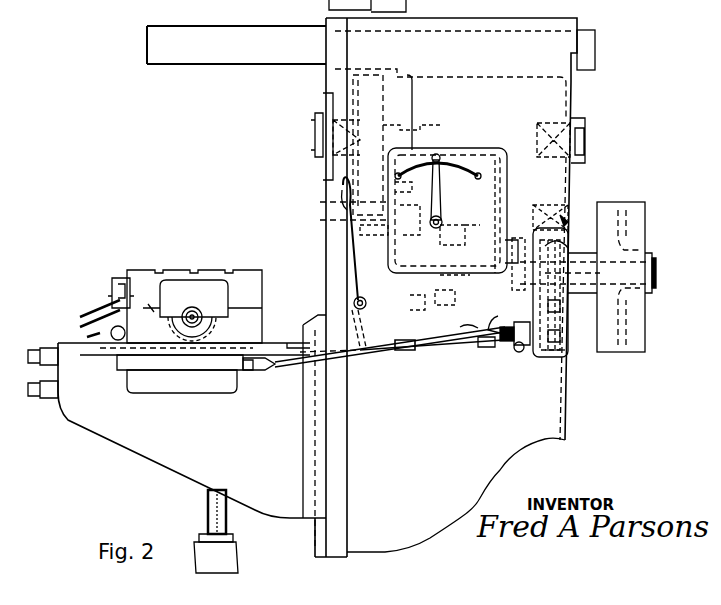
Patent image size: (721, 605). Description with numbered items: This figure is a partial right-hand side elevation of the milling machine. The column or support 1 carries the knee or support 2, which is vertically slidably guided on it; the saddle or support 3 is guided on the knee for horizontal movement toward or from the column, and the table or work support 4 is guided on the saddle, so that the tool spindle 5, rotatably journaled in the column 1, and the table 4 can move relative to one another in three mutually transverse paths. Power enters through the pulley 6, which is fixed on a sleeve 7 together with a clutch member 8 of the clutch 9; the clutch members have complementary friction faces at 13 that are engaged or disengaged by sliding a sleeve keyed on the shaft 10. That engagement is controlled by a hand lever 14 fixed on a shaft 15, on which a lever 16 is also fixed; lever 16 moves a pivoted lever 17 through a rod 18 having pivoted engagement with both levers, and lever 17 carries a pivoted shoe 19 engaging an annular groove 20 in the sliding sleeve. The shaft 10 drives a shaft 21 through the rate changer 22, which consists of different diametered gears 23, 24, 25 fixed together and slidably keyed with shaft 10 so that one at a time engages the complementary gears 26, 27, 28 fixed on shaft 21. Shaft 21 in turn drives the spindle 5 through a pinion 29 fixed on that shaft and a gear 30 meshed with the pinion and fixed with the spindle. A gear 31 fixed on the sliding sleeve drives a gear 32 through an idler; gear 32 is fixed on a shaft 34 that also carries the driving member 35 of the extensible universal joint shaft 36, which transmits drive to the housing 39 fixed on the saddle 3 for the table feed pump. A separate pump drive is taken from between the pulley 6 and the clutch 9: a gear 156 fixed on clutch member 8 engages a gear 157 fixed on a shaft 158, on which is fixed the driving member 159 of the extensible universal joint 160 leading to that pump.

The column 1 is at (566, 416).
The knee 2 is at (152, 464).
The saddle 3 is at (262, 332).
The table 4 is at (245, 270).
The tool spindle 5 is at (323, 123).
The pulley 6 is at (610, 206).
The sleeve 7 is at (590, 253).
The clutch member 8 is at (568, 219).
The clutch 9 is at (567, 245).
The shaft 10 is at (464, 276).
The friction faces 13 is at (540, 215).
The hand lever 14 is at (342, 239).
The shaft 15 is at (366, 304).
The lever 16 is at (368, 322).
The pivoted lever 17 is at (527, 350).
The rod 18 is at (480, 348).
The pivoted shoe 19 is at (504, 225).
The annular groove 20 is at (522, 262).
The shaft 21 is at (482, 205).
The rate changer 22 is at (445, 245).
The gear 23 is at (416, 300).
The gear 24 is at (425, 322).
The gear 25 is at (445, 296).
The gear 26 is at (398, 194).
The gear 27 is at (447, 196).
The gear 28 is at (478, 174).
The pinion 29 is at (367, 232).
The gear 30 is at (383, 102).
The gear 31 is at (505, 255).
The gear 32 is at (507, 347).
The shaft 34 is at (492, 316).
The driving member 35 is at (470, 318).
The extensible universal joint shaft 36 is at (403, 350).
The housing 39 is at (117, 362).
The gear 156 is at (550, 308).
The gear 157 is at (568, 358).
The shaft 158 is at (550, 335).
The driving member 159 is at (519, 352).
The extensible universal joint 160 is at (452, 348).